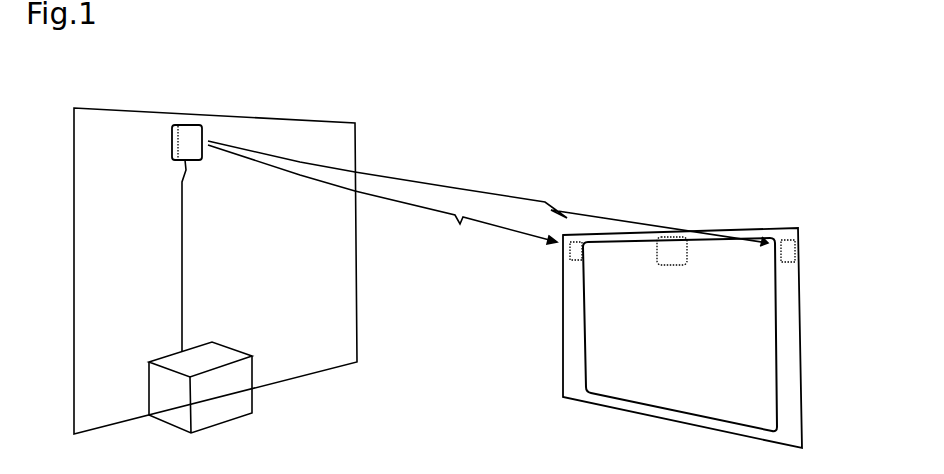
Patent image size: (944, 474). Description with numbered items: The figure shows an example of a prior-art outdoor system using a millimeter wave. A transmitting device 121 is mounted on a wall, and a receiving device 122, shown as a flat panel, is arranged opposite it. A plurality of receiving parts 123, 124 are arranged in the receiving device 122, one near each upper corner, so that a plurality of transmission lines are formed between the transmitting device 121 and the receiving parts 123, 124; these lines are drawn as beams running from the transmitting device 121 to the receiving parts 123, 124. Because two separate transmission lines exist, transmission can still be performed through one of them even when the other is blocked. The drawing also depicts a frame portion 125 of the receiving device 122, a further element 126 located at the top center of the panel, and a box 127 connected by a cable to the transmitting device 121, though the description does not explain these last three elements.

The transmitting device 121 is at (185, 123).
The receiving device 122 is at (676, 322).
The receiving part 123 is at (581, 255).
The receiving part 124 is at (795, 228).
The display frame 125 is at (803, 375).
The sensor unit 126 is at (673, 265).
The control box 127 is at (249, 356).